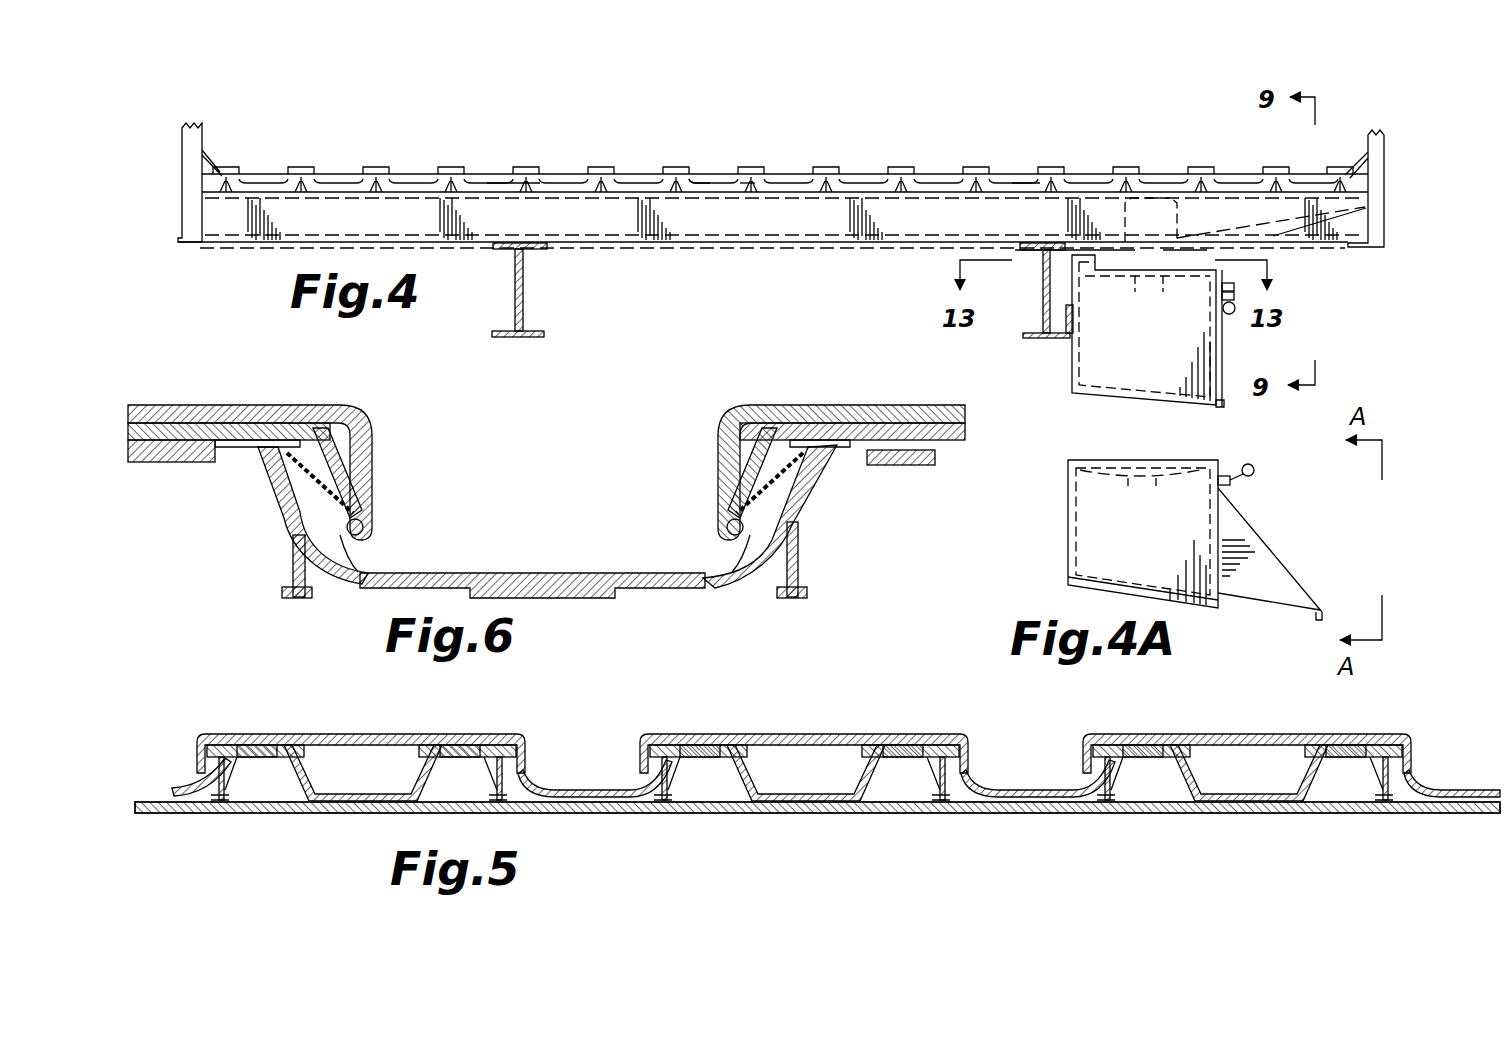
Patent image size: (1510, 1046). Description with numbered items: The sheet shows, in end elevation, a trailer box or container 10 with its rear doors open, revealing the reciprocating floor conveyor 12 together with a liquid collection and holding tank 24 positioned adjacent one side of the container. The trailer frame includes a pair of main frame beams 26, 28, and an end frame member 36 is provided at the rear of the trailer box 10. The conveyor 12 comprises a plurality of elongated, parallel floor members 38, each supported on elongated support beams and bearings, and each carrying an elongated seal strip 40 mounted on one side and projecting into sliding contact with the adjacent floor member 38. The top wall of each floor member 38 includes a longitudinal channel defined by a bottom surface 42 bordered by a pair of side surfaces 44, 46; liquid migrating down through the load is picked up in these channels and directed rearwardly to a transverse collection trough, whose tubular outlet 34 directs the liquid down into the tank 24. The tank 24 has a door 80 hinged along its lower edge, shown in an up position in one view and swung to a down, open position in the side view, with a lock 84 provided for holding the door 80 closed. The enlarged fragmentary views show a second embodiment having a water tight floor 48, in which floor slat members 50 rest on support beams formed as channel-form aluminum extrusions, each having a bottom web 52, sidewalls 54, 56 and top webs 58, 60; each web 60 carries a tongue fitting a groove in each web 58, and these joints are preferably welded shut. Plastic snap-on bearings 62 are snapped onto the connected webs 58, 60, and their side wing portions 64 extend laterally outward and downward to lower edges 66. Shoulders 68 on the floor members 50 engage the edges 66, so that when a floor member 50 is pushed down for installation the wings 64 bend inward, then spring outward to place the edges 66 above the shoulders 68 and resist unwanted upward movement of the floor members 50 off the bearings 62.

In FIG. 4, the container 10 is at (252, 150).
In FIG. 4, the reciprocating floor conveyor 12 is at (878, 148).
In FIG. 4, the liquid collection and holding tank 24 is at (1112, 352).
In FIG. 4A, the liquid collection and holding tank 24 is at (1080, 548).
In FIG. 4, the main frame beam 26 is at (535, 307).
In FIG. 4, the main frame beam 28 is at (1040, 312).
In FIG. 4, the tubular outlet 34 is at (1168, 280).
In FIG. 4A, the tubular outlet 34 is at (1165, 470).
In FIG. 4, the end frame member 36 is at (736, 220).
In FIG. 4, the floor member 38 is at (555, 162).
In FIG. 4, the seal strip 40 is at (300, 170).
In FIG. 4, the bottom surface 42 is at (700, 172).
In FIG. 4, the side surface 44 is at (693, 170).
In FIG. 4, the side surface 46 is at (735, 170).
In FIG. 5, the water tight floor 48 is at (855, 813).
In FIG. 6, the floor slat member 50 is at (258, 403).
In FIG. 5, the floor slat member 50 is at (528, 740).
In FIG. 6, the bottom web 52 is at (500, 572).
In FIG. 5, the bottom web 52 is at (585, 792).
In FIG. 6, the sidewall 54 is at (290, 500).
In FIG. 6, the sidewall 56 is at (805, 500).
In FIG. 6, the top web 58 is at (240, 448).
In FIG. 5, the top web 58 is at (282, 760).
In FIG. 6, the top web 60 is at (855, 453).
In FIG. 5, the top web 60 is at (238, 770).
In FIG. 6, the plastic snap-on bearing 62 is at (330, 470).
In FIG. 6, the side wing portion 64 is at (357, 495).
In FIG. 6, the lower edge 66 is at (345, 520).
In FIG. 6, the shoulder 68 is at (343, 578).
In FIG. 4, the door 80 is at (1228, 360).
In FIG. 4A, the door 80 is at (1272, 605).
In FIG. 4, the lock 84 is at (1238, 305).
In FIG. 4A, the lock 84 is at (1253, 475).